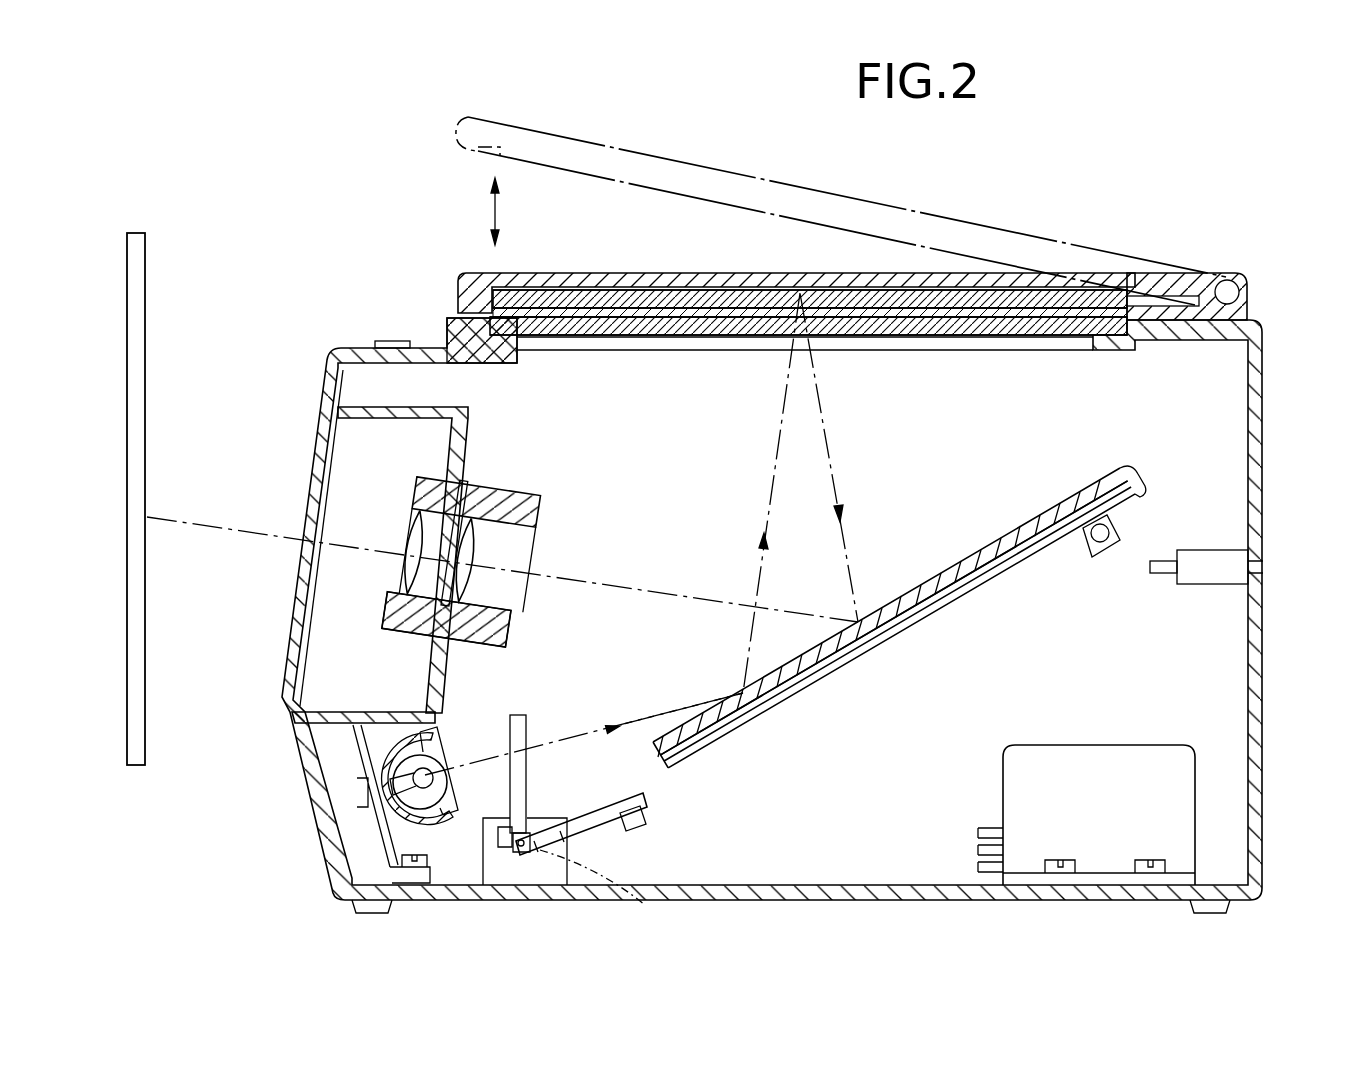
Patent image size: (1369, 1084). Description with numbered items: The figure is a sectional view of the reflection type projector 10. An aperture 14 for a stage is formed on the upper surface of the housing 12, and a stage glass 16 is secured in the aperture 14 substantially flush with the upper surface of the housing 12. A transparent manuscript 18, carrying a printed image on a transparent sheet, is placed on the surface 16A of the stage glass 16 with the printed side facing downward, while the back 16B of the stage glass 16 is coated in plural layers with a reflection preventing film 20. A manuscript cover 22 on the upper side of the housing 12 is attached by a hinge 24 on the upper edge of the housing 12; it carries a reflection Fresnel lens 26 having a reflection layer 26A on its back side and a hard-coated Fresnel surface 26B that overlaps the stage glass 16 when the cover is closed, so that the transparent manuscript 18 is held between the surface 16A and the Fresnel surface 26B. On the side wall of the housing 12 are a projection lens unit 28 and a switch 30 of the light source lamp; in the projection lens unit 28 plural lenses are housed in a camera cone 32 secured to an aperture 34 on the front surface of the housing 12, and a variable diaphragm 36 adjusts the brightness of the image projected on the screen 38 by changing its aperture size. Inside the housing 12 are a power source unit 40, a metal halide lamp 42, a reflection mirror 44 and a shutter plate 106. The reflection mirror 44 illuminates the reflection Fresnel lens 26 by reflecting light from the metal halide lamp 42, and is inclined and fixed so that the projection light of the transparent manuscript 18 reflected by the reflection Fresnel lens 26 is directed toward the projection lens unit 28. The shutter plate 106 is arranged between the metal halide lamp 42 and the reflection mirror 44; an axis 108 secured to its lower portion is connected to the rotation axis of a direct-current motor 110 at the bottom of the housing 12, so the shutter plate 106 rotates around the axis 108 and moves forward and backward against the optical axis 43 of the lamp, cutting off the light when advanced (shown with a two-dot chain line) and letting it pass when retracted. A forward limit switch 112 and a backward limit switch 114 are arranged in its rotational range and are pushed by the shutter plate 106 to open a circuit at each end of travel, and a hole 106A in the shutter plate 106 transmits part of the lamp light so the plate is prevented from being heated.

The reflection type projector 10 is at (1115, 200).
The housing 12 is at (1265, 422).
The aperture 14 is at (868, 345).
The stage glass 16 is at (547, 335).
The surface of the stage glass 16A is at (737, 303).
The back of the stage glass 16B is at (718, 338).
The transparent manuscript 18 is at (603, 290).
The reflection preventing film 20 is at (678, 340).
The manuscript cover 22 is at (788, 277).
The hinge 24 is at (1228, 290).
The reflection Fresnel lens 26 is at (553, 295).
The reflection layer 26A is at (653, 300).
The Fresnel surface 26B is at (634, 322).
The projection lens unit 28 is at (480, 548).
The switch 30 is at (1265, 568).
The camera cone 32 is at (512, 624).
The aperture 34 is at (480, 612).
The variable diaphragm 36 is at (440, 505).
The screen 38 is at (146, 283).
The power source unit 40 is at (1040, 745).
The metal halide lamp 42 is at (436, 757).
The optical axis 43 is at (648, 705).
The reflection mirror 44 is at (900, 607).
The shutter plate 106 is at (645, 800).
The hole 106A is at (621, 900).
The axis 108 is at (536, 852).
The direct-current motor 110 is at (557, 860).
The forward limit switch 112 is at (497, 835).
The backward limit switch 114 is at (632, 832).